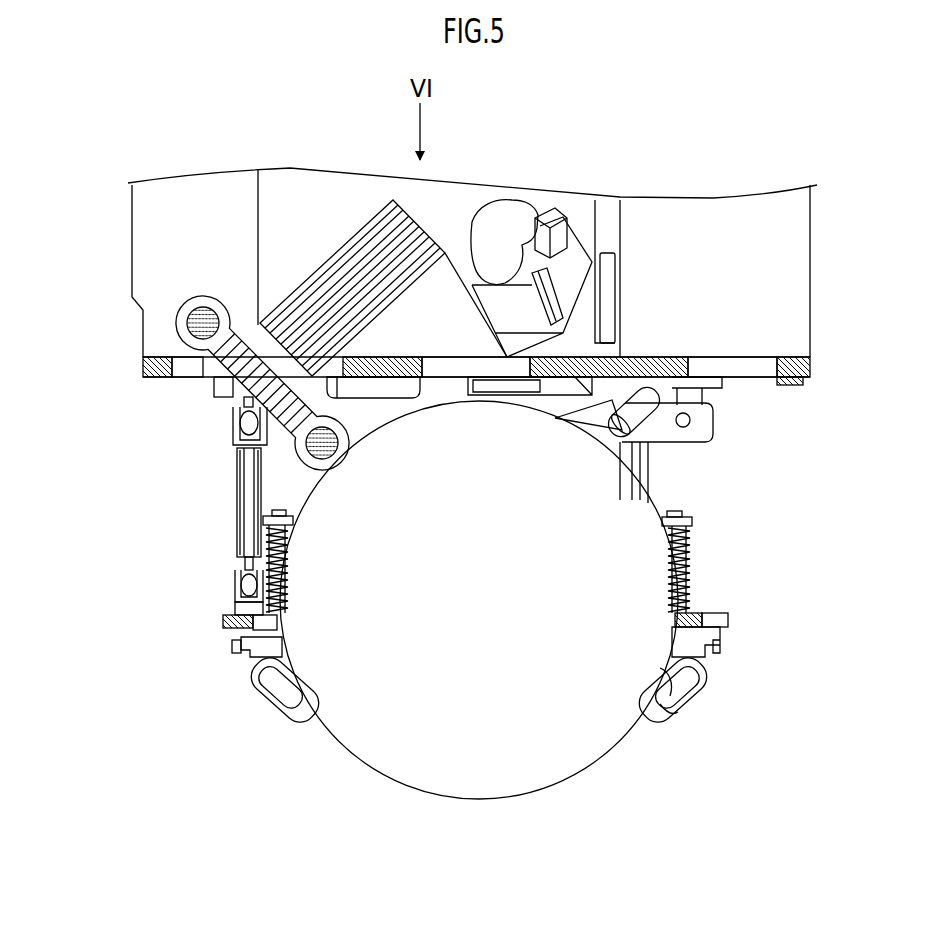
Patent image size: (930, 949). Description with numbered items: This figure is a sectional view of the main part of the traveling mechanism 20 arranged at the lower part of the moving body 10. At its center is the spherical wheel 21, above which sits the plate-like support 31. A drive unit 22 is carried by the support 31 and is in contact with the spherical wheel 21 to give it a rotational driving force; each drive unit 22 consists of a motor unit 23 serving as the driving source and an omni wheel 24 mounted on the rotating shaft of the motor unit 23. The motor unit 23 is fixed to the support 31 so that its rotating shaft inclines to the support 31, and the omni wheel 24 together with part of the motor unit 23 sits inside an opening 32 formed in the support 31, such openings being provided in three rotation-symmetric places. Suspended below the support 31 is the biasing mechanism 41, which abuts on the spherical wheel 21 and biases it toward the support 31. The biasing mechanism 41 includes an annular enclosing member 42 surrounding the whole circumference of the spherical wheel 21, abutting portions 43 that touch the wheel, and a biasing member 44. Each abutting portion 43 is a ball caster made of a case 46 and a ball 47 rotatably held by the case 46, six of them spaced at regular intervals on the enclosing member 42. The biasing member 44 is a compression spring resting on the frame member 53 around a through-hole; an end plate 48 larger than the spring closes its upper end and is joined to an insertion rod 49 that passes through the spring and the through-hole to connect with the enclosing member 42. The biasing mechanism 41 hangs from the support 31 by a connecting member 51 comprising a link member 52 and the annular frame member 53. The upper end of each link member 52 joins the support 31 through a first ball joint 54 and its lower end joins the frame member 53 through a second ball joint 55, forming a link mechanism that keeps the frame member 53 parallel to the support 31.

The moving body 10 is at (90, 125).
The traveling mechanism 20 is at (95, 228).
The spherical wheel 21 is at (508, 805).
The drive unit 22 is at (282, 78).
The motor unit 23 is at (298, 292).
The omni wheel 24 is at (190, 305).
The support 31 is at (815, 357).
The opening 32 is at (168, 356).
The biasing mechanism 41 is at (698, 543).
The enclosing member 42 is at (232, 645).
The abutting portion 43 is at (312, 722).
The biasing member 44 is at (684, 562).
The case 46 is at (692, 704).
The ball 47 is at (686, 712).
The end plate 48 is at (681, 512).
The insertion rod 49 is at (690, 572).
The connecting member 51 is at (230, 463).
The link member 52 is at (237, 472).
The frame member 53 is at (232, 620).
The first ball joint 54 is at (230, 427).
The second ball joint 55 is at (237, 600).